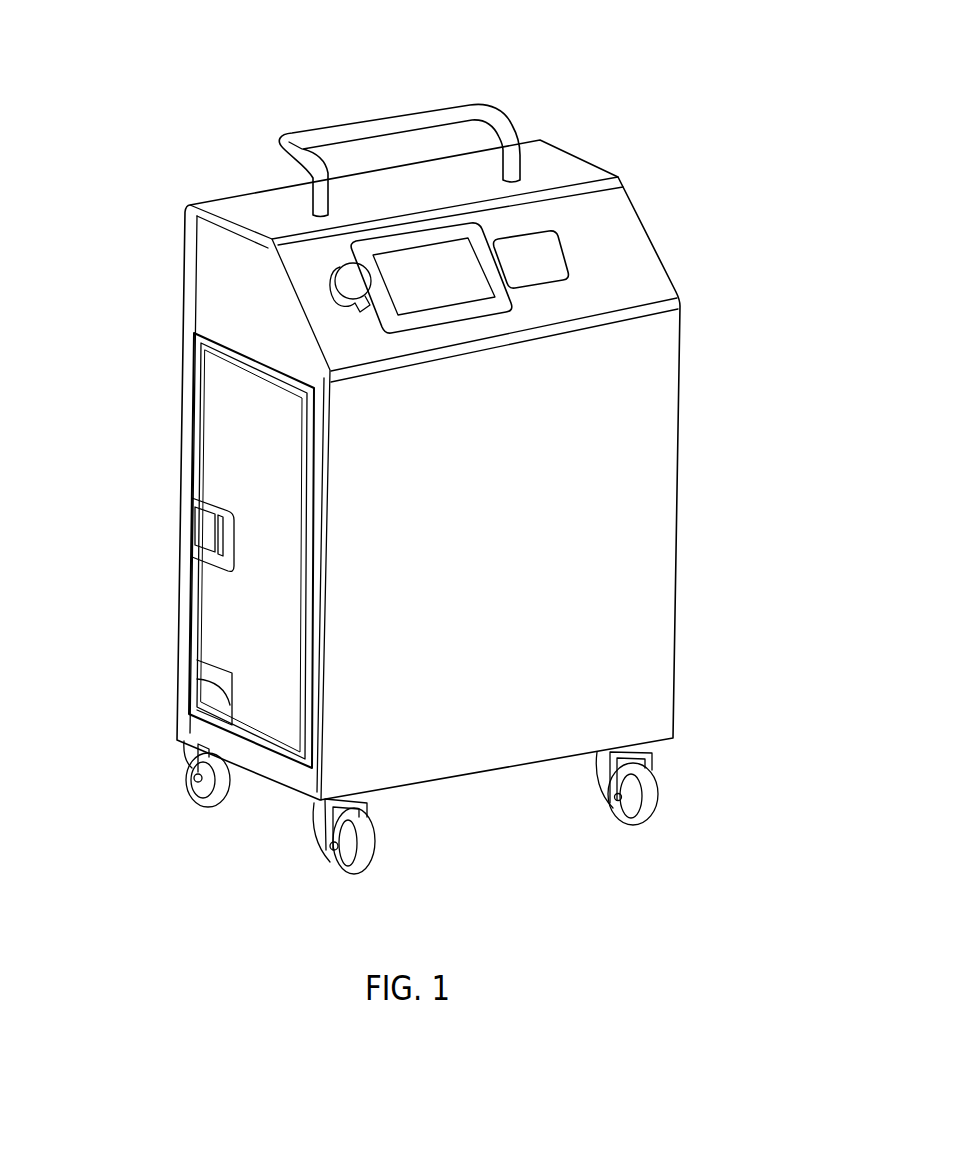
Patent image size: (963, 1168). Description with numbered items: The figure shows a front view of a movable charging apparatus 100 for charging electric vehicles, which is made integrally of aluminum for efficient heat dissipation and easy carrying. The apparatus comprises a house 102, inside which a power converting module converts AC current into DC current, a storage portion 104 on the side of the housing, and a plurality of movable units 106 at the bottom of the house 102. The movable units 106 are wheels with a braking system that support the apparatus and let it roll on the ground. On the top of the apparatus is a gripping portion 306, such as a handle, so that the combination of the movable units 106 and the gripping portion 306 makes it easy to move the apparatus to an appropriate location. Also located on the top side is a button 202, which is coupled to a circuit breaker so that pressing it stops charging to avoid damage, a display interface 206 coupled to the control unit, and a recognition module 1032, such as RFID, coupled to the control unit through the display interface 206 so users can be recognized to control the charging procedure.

The movable charging apparatus 100 is at (53, 39).
The house 102 is at (671, 257).
The storage portion 104 is at (210, 621).
The movable units 106 is at (323, 858).
The button 202 is at (352, 305).
The display interface 206 is at (453, 322).
The recognition module 1032 is at (547, 288).
The gripping portion 306 is at (500, 115).